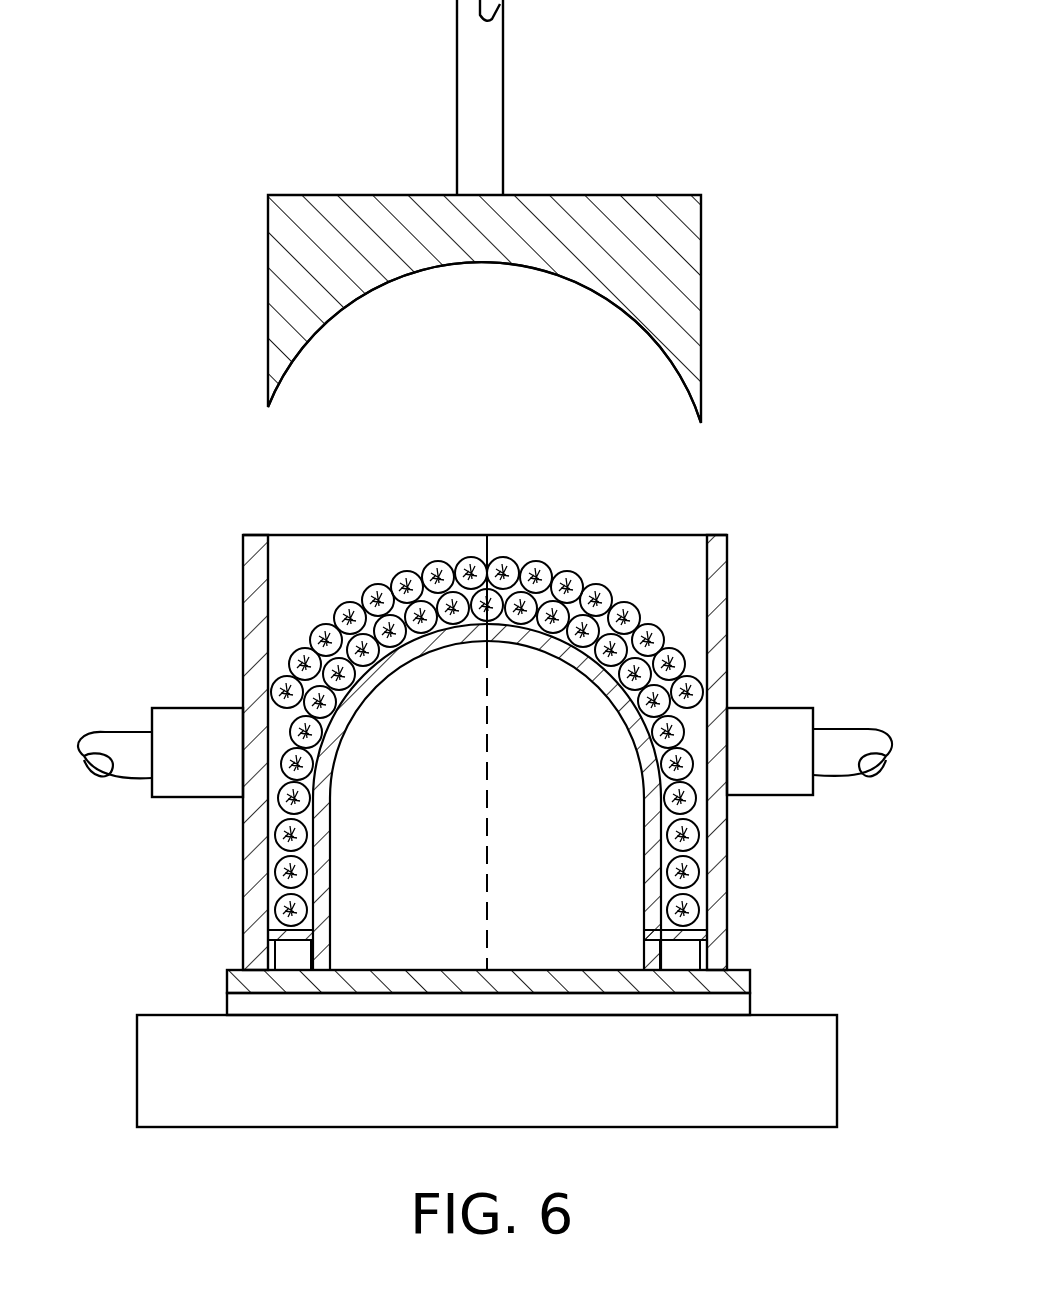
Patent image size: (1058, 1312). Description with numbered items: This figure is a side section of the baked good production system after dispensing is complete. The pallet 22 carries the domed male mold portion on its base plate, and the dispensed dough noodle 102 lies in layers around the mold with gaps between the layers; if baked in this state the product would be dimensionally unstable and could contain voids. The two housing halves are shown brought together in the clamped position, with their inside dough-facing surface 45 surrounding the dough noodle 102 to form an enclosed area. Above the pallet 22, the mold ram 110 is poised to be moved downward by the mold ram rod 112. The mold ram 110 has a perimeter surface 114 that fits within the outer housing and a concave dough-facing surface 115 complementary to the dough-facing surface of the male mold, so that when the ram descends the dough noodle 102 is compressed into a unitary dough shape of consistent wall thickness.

The mold ram 110 is at (203, 187).
The mold ram rod 112 is at (457, 89).
The perimeter surface 114 is at (268, 288).
The dough-facing surface 115 is at (332, 323).
The inside dough-facing surface 45 is at (268, 578).
The dough noodle 102 is at (600, 600).
The pallet 22 is at (193, 918).